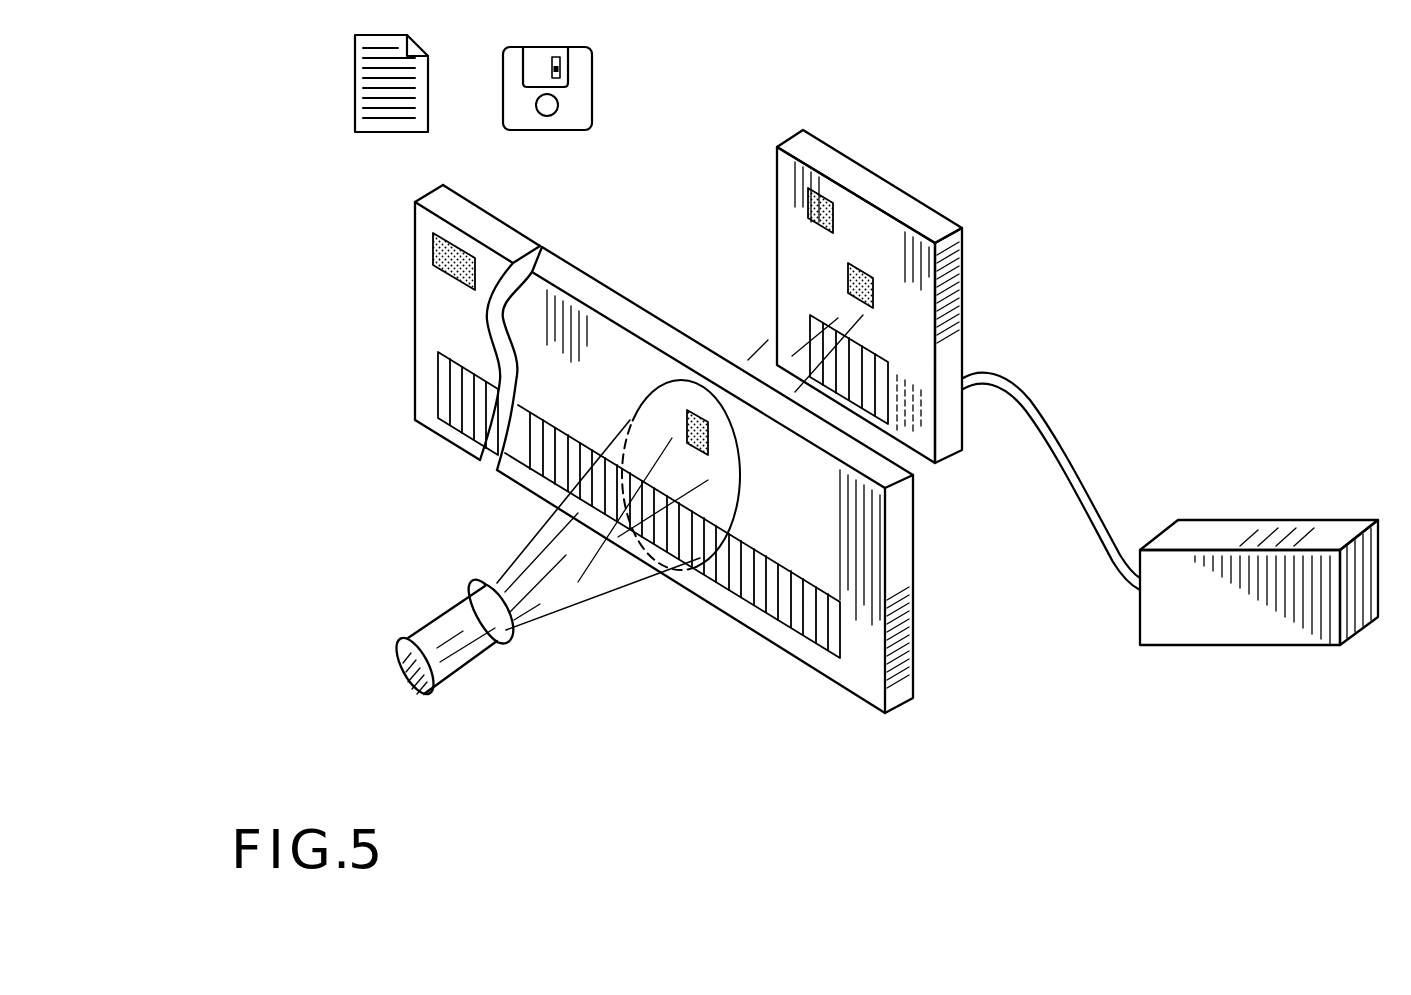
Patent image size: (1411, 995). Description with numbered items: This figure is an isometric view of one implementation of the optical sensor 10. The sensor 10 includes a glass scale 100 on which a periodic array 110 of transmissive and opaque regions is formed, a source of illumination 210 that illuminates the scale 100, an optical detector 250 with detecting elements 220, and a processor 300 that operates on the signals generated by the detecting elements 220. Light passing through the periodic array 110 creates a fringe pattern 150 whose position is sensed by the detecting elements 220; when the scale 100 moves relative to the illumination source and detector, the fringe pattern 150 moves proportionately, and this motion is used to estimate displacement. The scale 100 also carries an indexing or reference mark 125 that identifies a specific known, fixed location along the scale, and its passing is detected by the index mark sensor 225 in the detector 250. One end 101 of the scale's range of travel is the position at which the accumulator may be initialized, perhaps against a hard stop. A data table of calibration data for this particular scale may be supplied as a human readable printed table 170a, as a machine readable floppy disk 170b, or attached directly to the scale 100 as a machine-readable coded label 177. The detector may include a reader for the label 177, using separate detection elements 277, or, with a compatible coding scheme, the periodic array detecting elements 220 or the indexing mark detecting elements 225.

The optical sensor 10 is at (347, 281).
The glass scale 100 is at (604, 278).
The end of range of travel 101 is at (837, 648).
The periodic array 110 is at (800, 640).
The indexing or reference mark 125 is at (702, 411).
The fringe pattern 150 is at (905, 413).
The human readable printed table 170a is at (355, 79).
The floppy disk 170b is at (593, 92).
The machine-readable coded label 177 is at (462, 247).
The source of illumination 210 is at (398, 660).
The detecting elements 220 is at (880, 361).
The index mark sensor 225 is at (862, 263).
The optical detector 250 is at (966, 230).
The separate detection elements 277 is at (823, 195).
The processor 300 is at (1332, 517).